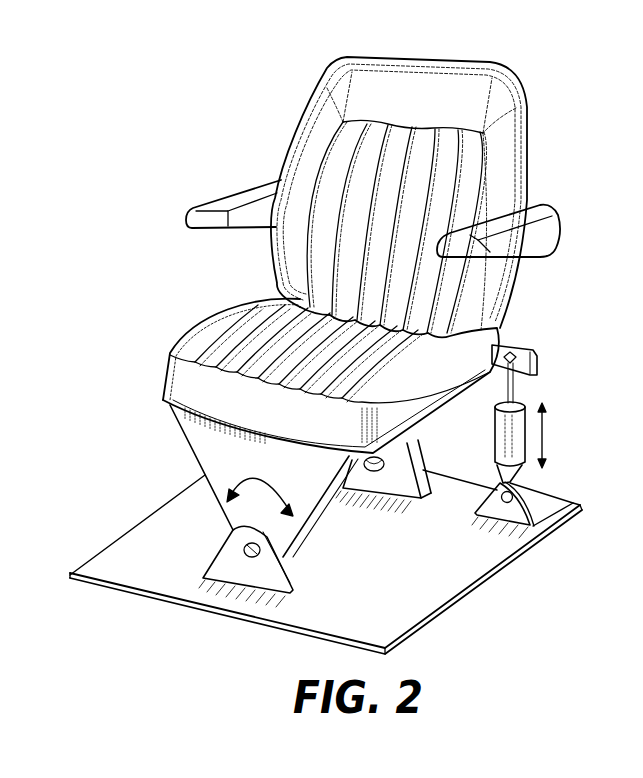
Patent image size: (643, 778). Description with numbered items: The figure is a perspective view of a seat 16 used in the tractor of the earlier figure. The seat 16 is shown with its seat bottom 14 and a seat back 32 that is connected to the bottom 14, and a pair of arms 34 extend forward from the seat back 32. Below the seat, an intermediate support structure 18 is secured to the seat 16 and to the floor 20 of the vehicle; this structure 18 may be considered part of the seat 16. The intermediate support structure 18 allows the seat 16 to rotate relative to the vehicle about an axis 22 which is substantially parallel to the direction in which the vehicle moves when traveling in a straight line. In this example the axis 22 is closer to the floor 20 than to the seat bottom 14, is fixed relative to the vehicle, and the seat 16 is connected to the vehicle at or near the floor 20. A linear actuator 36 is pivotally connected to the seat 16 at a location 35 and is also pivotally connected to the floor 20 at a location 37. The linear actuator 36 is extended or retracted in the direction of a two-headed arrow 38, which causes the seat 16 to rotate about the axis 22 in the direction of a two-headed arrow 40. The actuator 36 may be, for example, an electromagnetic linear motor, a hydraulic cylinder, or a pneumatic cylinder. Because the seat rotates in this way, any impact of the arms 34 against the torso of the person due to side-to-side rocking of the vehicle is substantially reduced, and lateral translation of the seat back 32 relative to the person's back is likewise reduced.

The seat bottom 14 is at (163, 378).
The seat 16 is at (268, 272).
The intermediate support structure 18 is at (207, 454).
The floor 20 is at (437, 580).
The axis 22 is at (247, 552).
The seat back 32 is at (420, 90).
The arms 34 is at (243, 183).
The location 35 is at (510, 343).
The linear actuator 36 is at (530, 395).
The location 37 is at (540, 515).
The two-headed arrow 38 is at (547, 431).
The two-headed arrow 40 is at (257, 482).